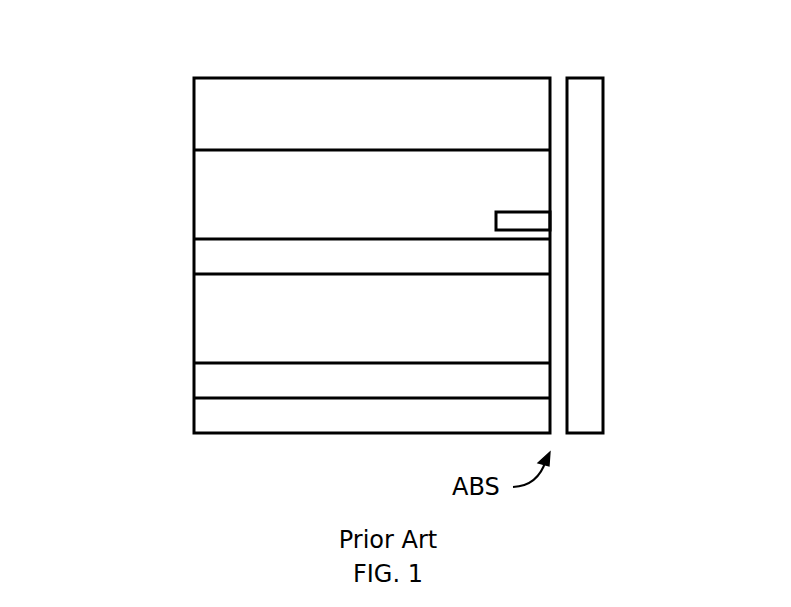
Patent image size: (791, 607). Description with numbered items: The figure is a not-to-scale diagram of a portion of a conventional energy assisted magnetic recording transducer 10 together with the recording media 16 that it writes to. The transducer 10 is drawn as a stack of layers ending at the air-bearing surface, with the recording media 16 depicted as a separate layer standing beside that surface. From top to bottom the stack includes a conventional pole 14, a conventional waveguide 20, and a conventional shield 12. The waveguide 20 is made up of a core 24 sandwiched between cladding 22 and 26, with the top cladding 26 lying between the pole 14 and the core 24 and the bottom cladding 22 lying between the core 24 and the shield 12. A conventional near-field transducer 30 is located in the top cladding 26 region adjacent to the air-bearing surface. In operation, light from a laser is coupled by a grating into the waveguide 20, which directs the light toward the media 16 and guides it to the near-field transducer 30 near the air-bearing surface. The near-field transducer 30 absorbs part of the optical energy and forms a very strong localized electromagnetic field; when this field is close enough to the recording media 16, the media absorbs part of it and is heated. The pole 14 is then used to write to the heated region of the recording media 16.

The energy assisted magnetic recording transducer 10 is at (405, 40).
The shield 12 is at (194, 420).
The pole 14 is at (194, 114).
The recording media 16 is at (603, 257).
The waveguide 20 is at (103, 273).
The cladding 22 is at (194, 345).
The core 24 is at (193, 257).
The cladding 26 is at (194, 185).
The near-field transducer 30 is at (532, 212).